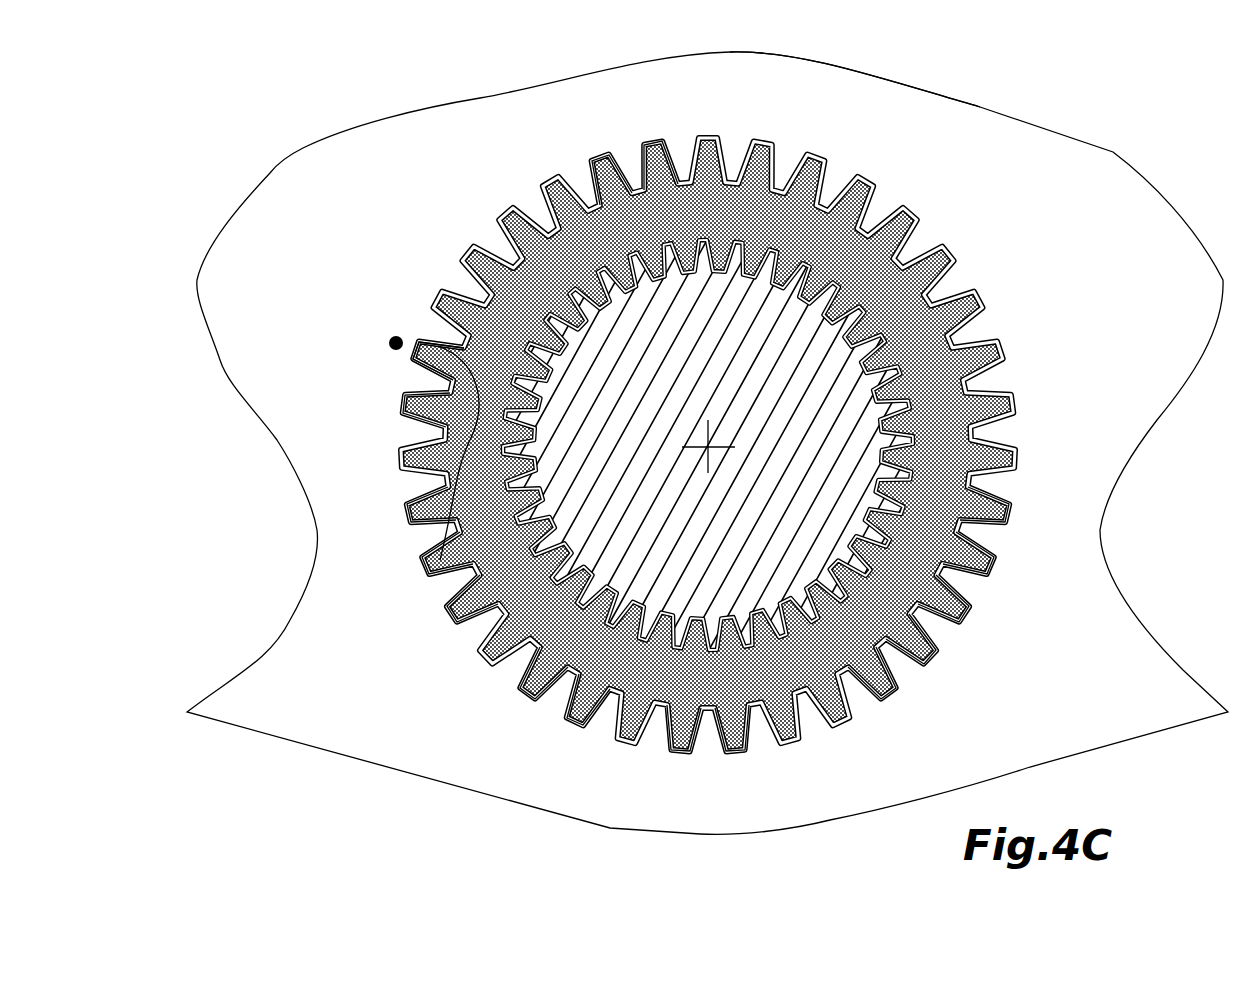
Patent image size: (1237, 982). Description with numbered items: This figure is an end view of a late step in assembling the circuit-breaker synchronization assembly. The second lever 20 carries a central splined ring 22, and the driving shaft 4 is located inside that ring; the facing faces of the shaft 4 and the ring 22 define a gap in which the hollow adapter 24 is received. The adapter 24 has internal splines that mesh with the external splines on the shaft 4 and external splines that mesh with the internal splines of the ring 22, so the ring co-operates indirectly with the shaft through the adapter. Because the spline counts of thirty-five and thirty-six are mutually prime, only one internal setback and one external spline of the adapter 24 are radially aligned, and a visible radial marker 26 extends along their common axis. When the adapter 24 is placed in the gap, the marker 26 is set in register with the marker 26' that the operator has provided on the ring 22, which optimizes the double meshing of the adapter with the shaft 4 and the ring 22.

The second lever 20 is at (477, 143).
The central splined ring 22 is at (842, 115).
The adapter 24 is at (708, 444).
The shaft 4 is at (817, 383).
The marker 26 is at (389, 453).
The marker 26' is at (345, 321).